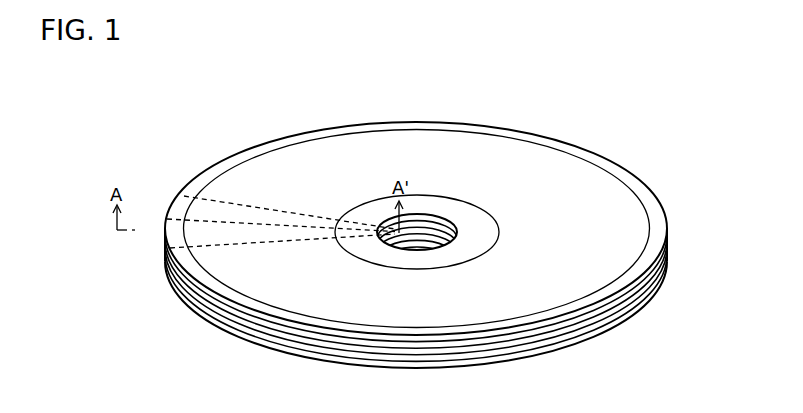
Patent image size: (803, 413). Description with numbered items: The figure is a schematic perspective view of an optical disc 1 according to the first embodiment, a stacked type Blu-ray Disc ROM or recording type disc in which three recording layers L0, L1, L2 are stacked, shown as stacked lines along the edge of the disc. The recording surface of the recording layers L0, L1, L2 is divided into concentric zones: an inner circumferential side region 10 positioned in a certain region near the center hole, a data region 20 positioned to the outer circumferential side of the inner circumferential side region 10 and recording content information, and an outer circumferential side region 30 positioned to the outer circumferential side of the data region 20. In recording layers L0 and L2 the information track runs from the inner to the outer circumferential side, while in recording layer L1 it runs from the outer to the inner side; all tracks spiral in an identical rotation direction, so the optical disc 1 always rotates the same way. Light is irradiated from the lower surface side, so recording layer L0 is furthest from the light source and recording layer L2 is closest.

The optical disc 1 is at (648, 163).
The inner circumferential side region 10 is at (373, 211).
The data region 20 is at (470, 155).
The outer circumferential side region 30 is at (284, 141).
The recording layer L0 is at (619, 310).
The recording layer L1 is at (593, 323).
The recording layer L2 is at (571, 344).